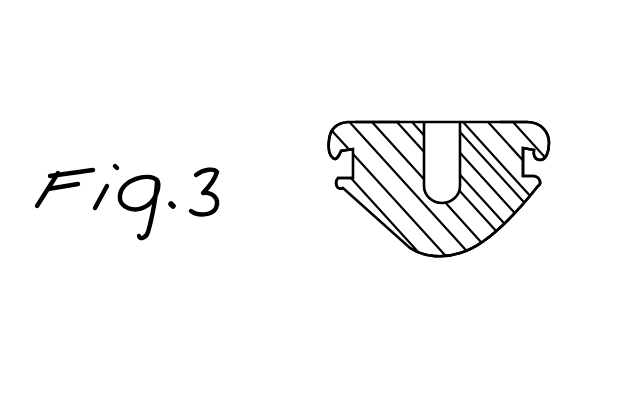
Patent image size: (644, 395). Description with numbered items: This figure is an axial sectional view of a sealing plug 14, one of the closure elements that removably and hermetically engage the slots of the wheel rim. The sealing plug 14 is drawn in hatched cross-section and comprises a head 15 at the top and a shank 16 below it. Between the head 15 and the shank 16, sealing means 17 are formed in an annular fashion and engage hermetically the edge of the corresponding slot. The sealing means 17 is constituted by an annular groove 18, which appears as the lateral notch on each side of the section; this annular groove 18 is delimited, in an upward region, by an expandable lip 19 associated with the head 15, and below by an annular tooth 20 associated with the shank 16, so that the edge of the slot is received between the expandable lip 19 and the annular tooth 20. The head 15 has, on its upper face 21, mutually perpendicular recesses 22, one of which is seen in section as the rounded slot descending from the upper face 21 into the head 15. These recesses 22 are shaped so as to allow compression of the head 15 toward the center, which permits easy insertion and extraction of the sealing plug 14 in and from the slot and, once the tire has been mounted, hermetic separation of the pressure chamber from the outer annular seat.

The sealing plug 14 is at (316, 106).
The head 15 is at (526, 104).
The shank 16 is at (497, 257).
The sealing means 17 is at (566, 157).
The annular groove 18 is at (540, 163).
The expandable lip 19 is at (328, 152).
The annular tooth 20 is at (339, 190).
The upper face 21 is at (379, 120).
The recesses 22 is at (457, 152).